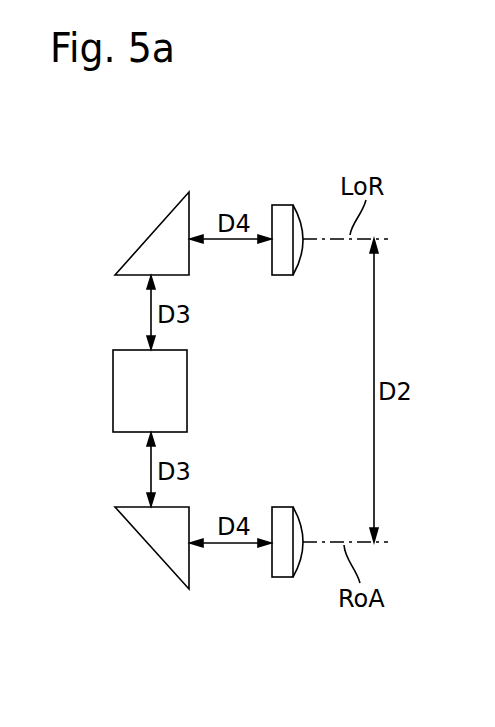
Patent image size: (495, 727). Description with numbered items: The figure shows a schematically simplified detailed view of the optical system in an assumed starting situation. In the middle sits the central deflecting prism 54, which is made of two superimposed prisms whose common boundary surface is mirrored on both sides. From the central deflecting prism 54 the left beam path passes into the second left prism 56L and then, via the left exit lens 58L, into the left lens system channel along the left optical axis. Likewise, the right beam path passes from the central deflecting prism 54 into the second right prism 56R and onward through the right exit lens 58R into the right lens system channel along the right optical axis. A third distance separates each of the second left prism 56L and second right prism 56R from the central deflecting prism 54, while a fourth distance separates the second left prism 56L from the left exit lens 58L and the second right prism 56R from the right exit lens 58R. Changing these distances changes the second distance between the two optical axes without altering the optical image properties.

The central deflecting prism 54 is at (136, 407).
The second left prism 56L is at (146, 240).
The second right prism 56R is at (147, 545).
The left exit lens 58L is at (283, 212).
The right exit lens 58R is at (285, 560).